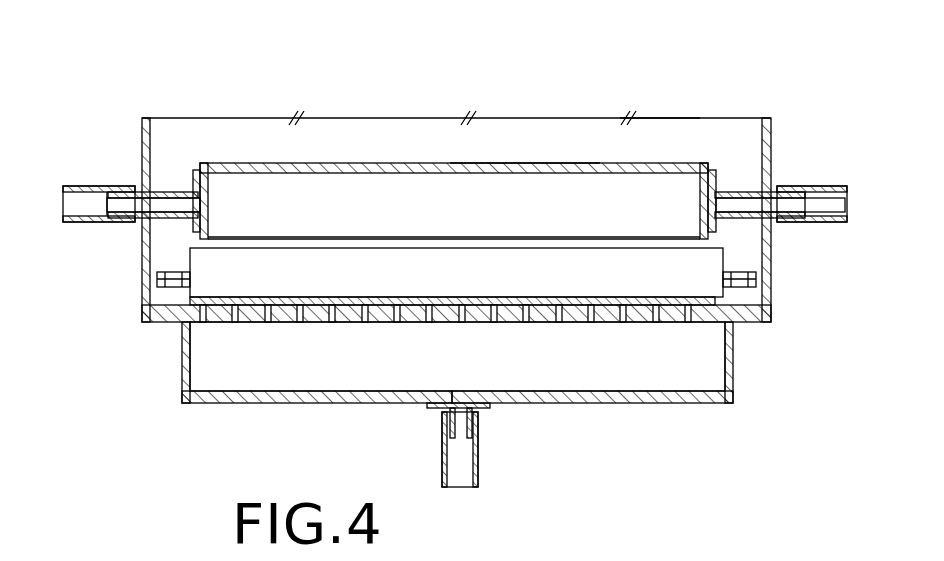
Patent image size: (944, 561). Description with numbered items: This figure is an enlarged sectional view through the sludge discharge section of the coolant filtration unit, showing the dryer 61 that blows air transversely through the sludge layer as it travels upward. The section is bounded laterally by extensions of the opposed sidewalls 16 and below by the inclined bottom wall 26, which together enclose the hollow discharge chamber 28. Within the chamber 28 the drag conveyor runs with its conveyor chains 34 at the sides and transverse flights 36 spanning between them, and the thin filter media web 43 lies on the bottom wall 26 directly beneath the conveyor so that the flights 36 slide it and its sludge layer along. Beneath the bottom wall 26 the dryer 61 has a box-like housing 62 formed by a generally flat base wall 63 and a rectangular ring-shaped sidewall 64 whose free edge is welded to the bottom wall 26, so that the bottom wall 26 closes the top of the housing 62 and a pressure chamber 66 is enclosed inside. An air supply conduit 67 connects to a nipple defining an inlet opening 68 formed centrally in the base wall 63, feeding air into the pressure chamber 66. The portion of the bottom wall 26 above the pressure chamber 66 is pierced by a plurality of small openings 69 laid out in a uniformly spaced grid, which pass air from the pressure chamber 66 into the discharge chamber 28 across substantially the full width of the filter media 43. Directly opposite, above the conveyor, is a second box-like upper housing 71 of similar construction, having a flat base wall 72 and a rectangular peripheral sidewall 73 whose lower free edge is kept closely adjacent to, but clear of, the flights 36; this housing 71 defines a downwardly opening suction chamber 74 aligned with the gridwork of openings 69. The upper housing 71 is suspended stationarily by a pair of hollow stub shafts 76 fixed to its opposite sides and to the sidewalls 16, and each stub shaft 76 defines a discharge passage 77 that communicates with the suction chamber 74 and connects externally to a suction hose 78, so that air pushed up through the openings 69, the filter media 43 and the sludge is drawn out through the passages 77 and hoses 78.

The sidewall 16 is at (145, 272).
The bottom wall 26 is at (165, 324).
The hollow chamber 28 is at (672, 128).
The conveyor chain 34 is at (758, 283).
The flight 36 is at (543, 278).
The filter media web 43 is at (383, 297).
The dryer 61 is at (203, 112).
The housing 62 is at (283, 409).
The base wall 63 is at (688, 403).
The sidewall 64 is at (736, 350).
The pressure chamber 66 is at (563, 365).
The air supply conduit 67 is at (462, 462).
The inlet opening 68 is at (440, 418).
The openings 69 is at (299, 323).
The upper housing 71 is at (517, 158).
The base wall 72 is at (356, 163).
The peripheral sidewall 73 is at (207, 182).
The suction chamber 74 is at (308, 180).
The stub shaft 76 is at (176, 190).
The discharge passage 77 is at (127, 205).
The suction hose 78 is at (93, 187).